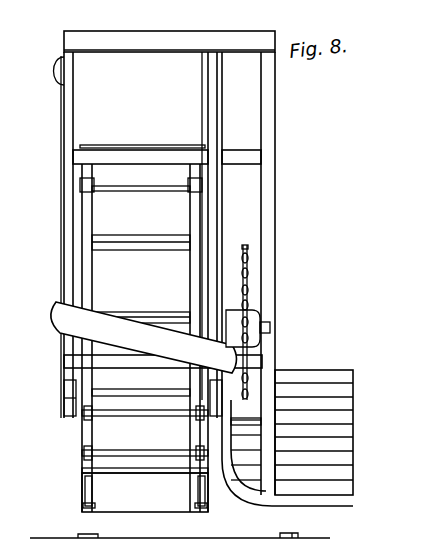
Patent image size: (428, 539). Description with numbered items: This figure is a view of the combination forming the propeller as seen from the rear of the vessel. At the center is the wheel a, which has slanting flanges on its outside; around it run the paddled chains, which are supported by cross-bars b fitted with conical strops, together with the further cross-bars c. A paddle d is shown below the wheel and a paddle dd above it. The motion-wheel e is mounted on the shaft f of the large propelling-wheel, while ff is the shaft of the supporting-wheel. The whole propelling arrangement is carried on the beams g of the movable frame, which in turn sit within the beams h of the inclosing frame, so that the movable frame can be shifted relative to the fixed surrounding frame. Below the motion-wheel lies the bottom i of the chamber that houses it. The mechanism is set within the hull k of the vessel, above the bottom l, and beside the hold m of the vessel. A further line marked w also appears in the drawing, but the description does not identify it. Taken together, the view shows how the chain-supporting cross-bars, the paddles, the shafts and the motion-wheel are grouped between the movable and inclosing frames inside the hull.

The beams of the inclosing frame h is at (180, 284).
The beams of the movable frame g is at (163, 280).
The wheel with slanting flanges a is at (141, 338).
The paddle above the wheel dd is at (141, 178).
The cross-bars with conical strops b is at (141, 235).
The shaft of the supporting-wheel ff is at (141, 392).
The cross-bars c is at (145, 433).
The paddle below the wheel d is at (145, 490).
The dashed guide line w is at (183, 357).
The hull k is at (144, 375).
The shaft of the large propelling-wheel f is at (248, 328).
The motion-wheel e is at (248, 319).
The bottom of the vessel l is at (287, 454).
The hold of the vessel m is at (292, 432).
The bottom of the chamber for the motion-wheel i is at (246, 417).